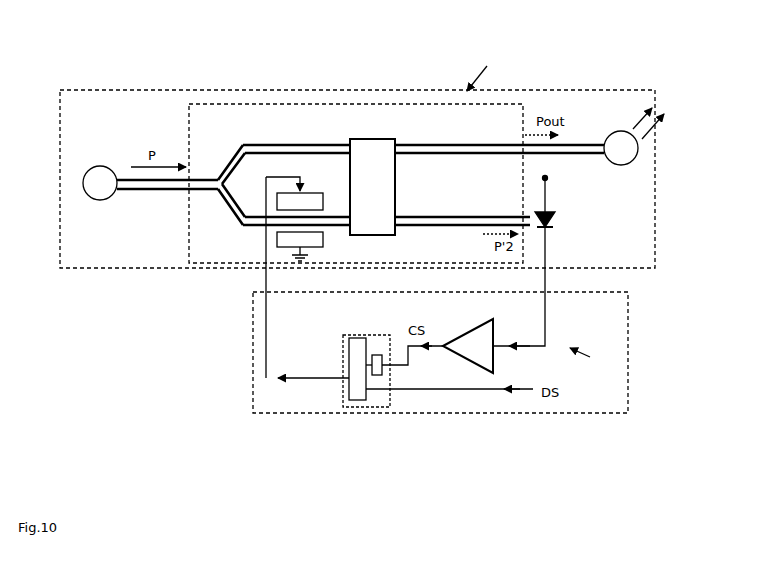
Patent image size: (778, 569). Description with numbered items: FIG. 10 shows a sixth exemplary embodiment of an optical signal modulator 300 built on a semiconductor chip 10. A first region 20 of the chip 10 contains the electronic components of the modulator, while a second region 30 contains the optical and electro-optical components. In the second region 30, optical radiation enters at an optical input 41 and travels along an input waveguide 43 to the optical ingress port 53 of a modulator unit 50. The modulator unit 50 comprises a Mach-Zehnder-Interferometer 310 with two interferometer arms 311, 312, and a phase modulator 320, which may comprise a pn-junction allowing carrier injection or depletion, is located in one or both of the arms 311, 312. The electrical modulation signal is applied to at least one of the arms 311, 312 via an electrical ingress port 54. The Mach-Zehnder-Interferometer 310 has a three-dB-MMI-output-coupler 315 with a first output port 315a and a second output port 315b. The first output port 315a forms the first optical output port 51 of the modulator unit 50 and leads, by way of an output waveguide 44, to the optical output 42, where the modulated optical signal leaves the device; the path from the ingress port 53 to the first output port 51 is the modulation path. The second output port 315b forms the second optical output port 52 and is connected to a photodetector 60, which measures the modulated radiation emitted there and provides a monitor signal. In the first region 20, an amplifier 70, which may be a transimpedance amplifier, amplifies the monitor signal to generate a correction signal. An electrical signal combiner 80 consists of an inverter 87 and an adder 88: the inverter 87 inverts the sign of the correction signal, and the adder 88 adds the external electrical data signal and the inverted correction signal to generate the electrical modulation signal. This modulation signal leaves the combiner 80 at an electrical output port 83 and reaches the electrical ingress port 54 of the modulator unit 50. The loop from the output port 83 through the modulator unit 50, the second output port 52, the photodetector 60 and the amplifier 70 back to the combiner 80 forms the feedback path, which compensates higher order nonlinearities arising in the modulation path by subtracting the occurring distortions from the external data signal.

The semiconductor chip 10 is at (142, 324).
The optical signal modulator 300 is at (168, 70).
The second region 30 is at (396, 90).
The modulator unit 50 is at (300, 100).
The first region 20 is at (629, 356).
The optical input 41 is at (82, 188).
The input waveguide 43 is at (148, 192).
The optical ingress port 53 is at (190, 193).
The interferometer arm 311 is at (238, 158).
The interferometer arm 312 is at (238, 213).
The Mach-Zehnder-Interferometer 310 is at (335, 149).
The 3 dB-MMI-output-coupler 315 is at (357, 186).
The phase modulator 320 is at (335, 234).
The first output port 315a is at (400, 151).
The second output port 315b is at (398, 217).
The first optical output port 51 is at (523, 148).
The output waveguide 44 is at (588, 151).
The optical output 42 is at (634, 131).
The second optical output port 52 is at (529, 221).
The photodetector 60 is at (535, 252).
The electrical ingress port 54 is at (264, 265).
The amplifier 70 is at (486, 346).
The electrical signal combiner 80 is at (365, 336).
The adder 88 is at (349, 348).
The inverter 87 is at (378, 355).
The electrical output port 83 is at (323, 380).